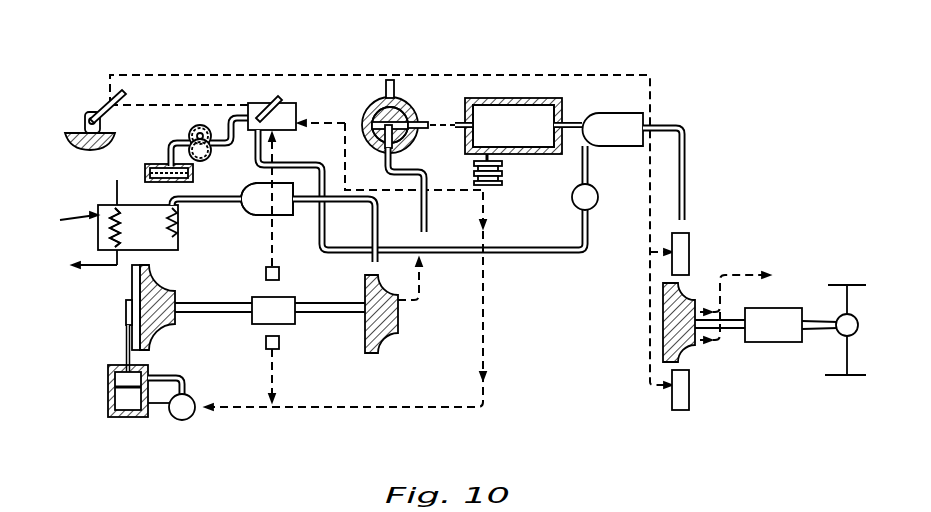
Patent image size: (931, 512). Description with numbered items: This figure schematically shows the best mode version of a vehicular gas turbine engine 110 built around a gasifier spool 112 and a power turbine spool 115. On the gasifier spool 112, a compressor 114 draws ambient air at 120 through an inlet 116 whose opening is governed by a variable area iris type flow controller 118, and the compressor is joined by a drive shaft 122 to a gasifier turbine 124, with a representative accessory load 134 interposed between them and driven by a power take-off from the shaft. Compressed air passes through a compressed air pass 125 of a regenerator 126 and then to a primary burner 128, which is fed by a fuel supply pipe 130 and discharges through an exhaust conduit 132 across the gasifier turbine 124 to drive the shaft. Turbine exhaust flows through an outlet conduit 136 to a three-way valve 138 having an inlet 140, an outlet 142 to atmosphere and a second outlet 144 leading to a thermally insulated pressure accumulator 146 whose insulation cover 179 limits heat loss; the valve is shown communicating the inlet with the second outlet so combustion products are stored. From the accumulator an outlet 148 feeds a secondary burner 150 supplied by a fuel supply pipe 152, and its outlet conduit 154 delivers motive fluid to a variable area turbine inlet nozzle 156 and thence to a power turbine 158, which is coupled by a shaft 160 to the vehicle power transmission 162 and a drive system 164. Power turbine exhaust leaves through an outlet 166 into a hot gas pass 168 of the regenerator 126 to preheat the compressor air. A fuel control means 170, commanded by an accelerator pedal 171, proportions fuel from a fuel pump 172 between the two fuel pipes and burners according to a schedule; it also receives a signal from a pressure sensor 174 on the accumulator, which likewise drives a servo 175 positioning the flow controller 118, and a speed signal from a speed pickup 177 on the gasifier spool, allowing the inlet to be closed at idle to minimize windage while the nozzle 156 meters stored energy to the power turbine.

The vehicular gas turbine engine 110 is at (487, 80).
The gasifier spool 112 is at (230, 316).
The compressor 114 is at (182, 297).
The power turbine spool 115 is at (726, 354).
The inlet 116 is at (132, 287).
The variable area inlet flow controller 118 is at (126, 332).
The ambient air 120 is at (132, 318).
The drive shaft 122 is at (197, 308).
The gasifier turbine 124 is at (383, 337).
The compressed air pass 125 is at (182, 233).
The regenerator 126 is at (59, 224).
The primary burner 128 is at (258, 200).
The fuel supply pipe 130 is at (258, 181).
The exhaust conduit 132 is at (305, 200).
The accessory load 134 is at (280, 307).
The outlet conduit 136 is at (430, 216).
The three-way valve 138 is at (368, 113).
The inlet 140 is at (398, 166).
The outlet 142 is at (393, 92).
The second outlet 144 is at (411, 127).
The pressure accumulator 146 is at (541, 100).
The outlet 148 is at (571, 124).
The secondary burner 150 is at (627, 120).
The fuel supply pipe 152 is at (590, 174).
The outlet conduit 154 is at (664, 128).
The variable area turbine inlet nozzle 156 is at (686, 249).
The power turbine 158 is at (663, 334).
The shaft 160 is at (735, 325).
The vehicle power transmission 162 is at (784, 318).
The drive system 164 is at (814, 320).
The outlet 166 is at (115, 193).
The hot gas pass 168 is at (110, 232).
The fuel control means 170 is at (288, 112).
The accelerator pedal 171 is at (108, 106).
The fuel pump 172 is at (190, 133).
The pressure sensor 174 is at (503, 177).
The servo 175 is at (108, 398).
The speed pickup 177 is at (280, 271).
The insulation cover 179 is at (509, 100).